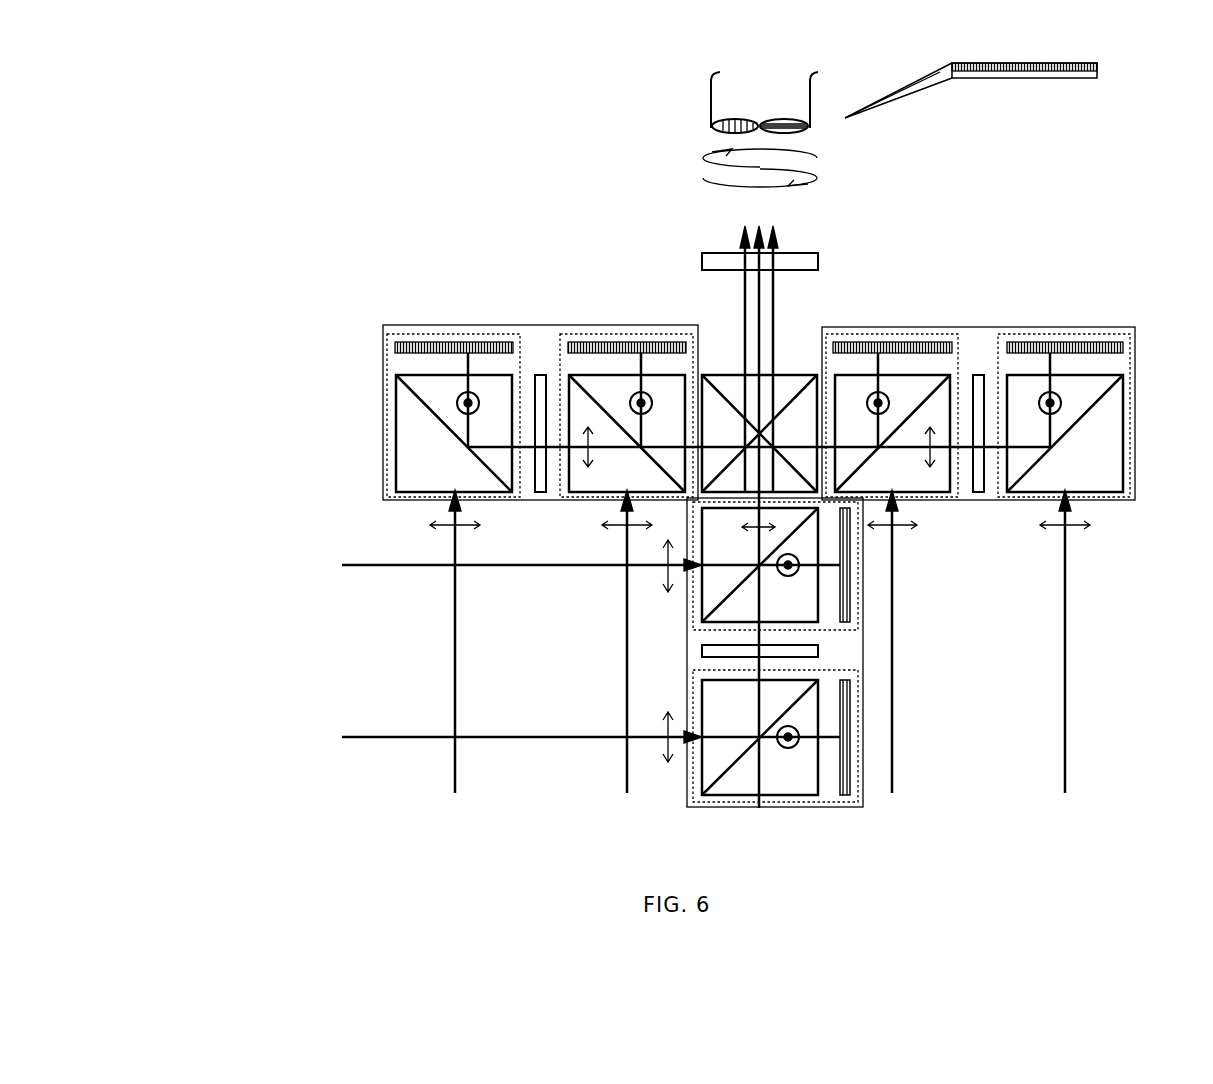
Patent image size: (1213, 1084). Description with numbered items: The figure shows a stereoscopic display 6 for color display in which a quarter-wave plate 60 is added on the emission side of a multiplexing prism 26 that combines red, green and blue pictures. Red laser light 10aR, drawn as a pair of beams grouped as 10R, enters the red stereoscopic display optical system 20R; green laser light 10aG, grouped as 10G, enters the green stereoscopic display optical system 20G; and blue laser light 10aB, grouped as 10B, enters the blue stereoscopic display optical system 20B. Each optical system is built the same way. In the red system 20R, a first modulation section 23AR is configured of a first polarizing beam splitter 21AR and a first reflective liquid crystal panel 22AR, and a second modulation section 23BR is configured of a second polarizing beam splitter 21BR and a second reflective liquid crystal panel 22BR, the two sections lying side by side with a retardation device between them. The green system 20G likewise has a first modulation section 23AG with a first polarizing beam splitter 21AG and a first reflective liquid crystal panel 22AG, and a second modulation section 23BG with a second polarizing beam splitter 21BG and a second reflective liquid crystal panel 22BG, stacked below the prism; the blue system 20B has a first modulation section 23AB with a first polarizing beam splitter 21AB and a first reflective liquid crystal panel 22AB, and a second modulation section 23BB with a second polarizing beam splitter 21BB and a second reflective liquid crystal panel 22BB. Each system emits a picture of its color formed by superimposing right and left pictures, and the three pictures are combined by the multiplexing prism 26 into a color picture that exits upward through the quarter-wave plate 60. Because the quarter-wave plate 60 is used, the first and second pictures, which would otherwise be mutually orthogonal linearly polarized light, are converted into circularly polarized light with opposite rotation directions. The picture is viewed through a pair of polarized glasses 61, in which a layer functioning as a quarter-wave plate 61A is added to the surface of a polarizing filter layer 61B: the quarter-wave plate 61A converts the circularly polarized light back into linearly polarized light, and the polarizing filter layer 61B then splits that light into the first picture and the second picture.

The stereoscopic display 6 is at (318, 228).
The pair of polarized glasses 61 is at (690, 105).
The λ/4 wave plate 61A is at (1028, 80).
The polarizing filter layer 61B is at (1100, 70).
The λ/4 wave plate 60 is at (806, 253).
The multiplexing prism 26 is at (802, 378).
The stereoscopic display optical system 20R is at (538, 326).
The first modulation section 23AR is at (402, 333).
The first reflective liquid crystal panel 22AR is at (447, 342).
The first polarizing beam splitter 21AR is at (490, 385).
The second modulation section 23BR is at (576, 333).
The second reflective liquid crystal panel 22BR is at (620, 342).
The second polarizing beam splitter 21BR is at (665, 385).
The stereoscopic display optical system 20B is at (977, 327).
The first modulation section 23AB is at (841, 333).
The first reflective liquid crystal panel 22AB is at (888, 342).
The first polarizing beam splitter 21AB is at (930, 385).
The second modulation section 23BB is at (1012, 333).
The second reflective liquid crystal panel 22BB is at (1057, 342).
The second polarizing beam splitter 21BB is at (1100, 385).
The stereoscopic display optical system 20G is at (778, 808).
The second modulation section 23BG is at (858, 548).
The second reflective liquid crystal panel 22BG is at (850, 578).
The second polarizing beam splitter 21BG is at (795, 607).
The first modulation section 23AG is at (858, 713).
The first reflective liquid crystal panel 22AG is at (850, 738).
The first polarizing beam splitter 21AG is at (795, 765).
The green light source unit 10G is at (263, 557).
The green laser light 10aG is at (354, 568).
The red light source unit 10R is at (635, 842).
The red laser light 10aR is at (456, 795).
The blue light source unit 10B is at (1073, 844).
The blue laser light 10aB is at (893, 795).